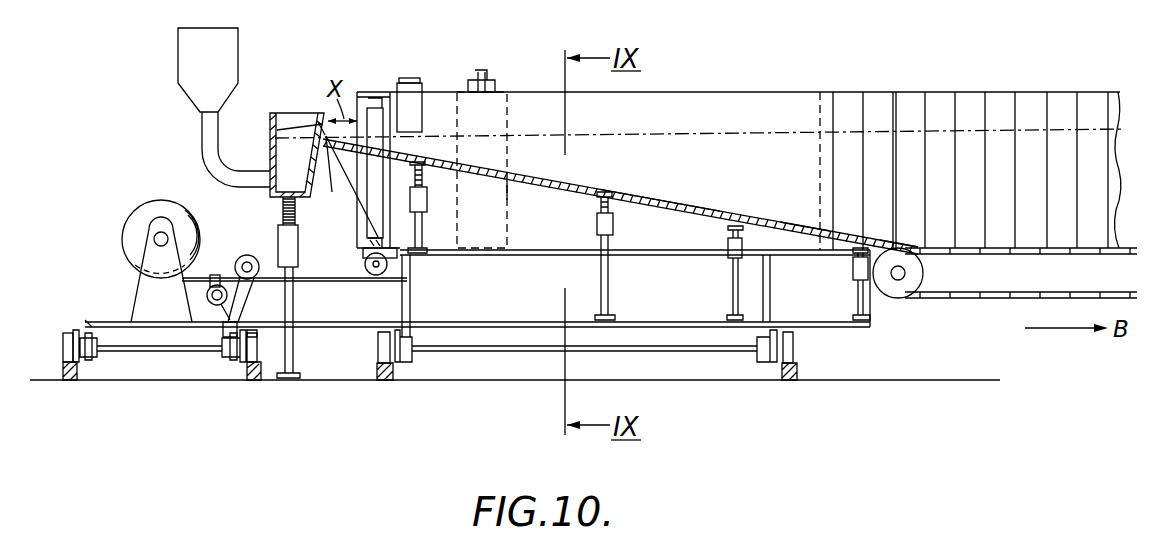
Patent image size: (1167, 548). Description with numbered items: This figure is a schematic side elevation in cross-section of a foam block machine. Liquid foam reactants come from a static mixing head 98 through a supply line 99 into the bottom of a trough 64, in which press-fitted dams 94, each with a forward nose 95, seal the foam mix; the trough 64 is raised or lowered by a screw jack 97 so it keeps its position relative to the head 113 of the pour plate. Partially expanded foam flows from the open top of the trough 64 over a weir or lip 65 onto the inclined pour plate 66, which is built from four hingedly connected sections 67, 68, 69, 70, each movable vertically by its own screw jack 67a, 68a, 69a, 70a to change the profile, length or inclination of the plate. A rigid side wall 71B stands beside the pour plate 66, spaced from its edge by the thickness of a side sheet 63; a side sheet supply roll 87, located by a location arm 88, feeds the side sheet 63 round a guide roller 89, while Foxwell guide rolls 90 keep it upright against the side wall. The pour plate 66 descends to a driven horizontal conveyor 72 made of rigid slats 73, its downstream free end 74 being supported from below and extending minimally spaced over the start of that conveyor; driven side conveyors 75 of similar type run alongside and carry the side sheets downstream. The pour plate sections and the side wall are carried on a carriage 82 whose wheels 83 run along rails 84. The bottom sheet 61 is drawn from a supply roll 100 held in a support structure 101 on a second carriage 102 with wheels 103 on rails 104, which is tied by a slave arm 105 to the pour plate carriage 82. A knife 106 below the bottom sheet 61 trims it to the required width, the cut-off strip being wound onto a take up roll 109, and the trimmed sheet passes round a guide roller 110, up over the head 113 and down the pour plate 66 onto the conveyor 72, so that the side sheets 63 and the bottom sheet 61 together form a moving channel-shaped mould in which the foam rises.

The static mixing head 98 is at (188, 68).
The supply line 99 is at (202, 147).
The trough 64 is at (270, 150).
The dam 94 is at (294, 122).
The nose 95 is at (320, 122).
The weir or lip 65 is at (322, 140).
The free end or head of the pour plate 113 is at (337, 179).
The guide roller 89 is at (368, 118).
The side sheet 63 is at (377, 118).
The Foxwell guide roll 90 is at (412, 78).
The location arm 88 is at (503, 56).
The pour plate section 67 is at (461, 170).
The screw jack 67a is at (424, 200).
The side sheet supply roll 87 is at (505, 192).
The pour plate 66 is at (583, 172).
The pour plate section 68 is at (653, 205).
The screw jack 68a is at (596, 230).
The pour plate section 69 is at (802, 236).
The screw jack 69a is at (727, 253).
The pour plate section 70 is at (880, 243).
The screw jack 70a is at (855, 271).
The rigid side wall 71B is at (720, 107).
The driven side conveyor 75 is at (1062, 102).
The free end of the pour plate 74 is at (908, 247).
The driven conveyor 72 is at (1126, 257).
The rigid slat 73 is at (965, 298).
The carriage 82 is at (466, 322).
The wheel 83 is at (793, 347).
The rail 84 is at (797, 373).
The bottom sheet 61 is at (318, 282).
The guide roller 110 is at (391, 275).
The screw jack 97 is at (298, 247).
The knife 106 is at (212, 276).
The take up roll 109 is at (240, 260).
The supply roll 100 is at (135, 242).
The support structure 101 is at (148, 297).
The carriage 102 is at (105, 321).
The wheel 103 is at (63, 350).
The rail 104 is at (66, 381).
The slave arm 105 is at (337, 327).